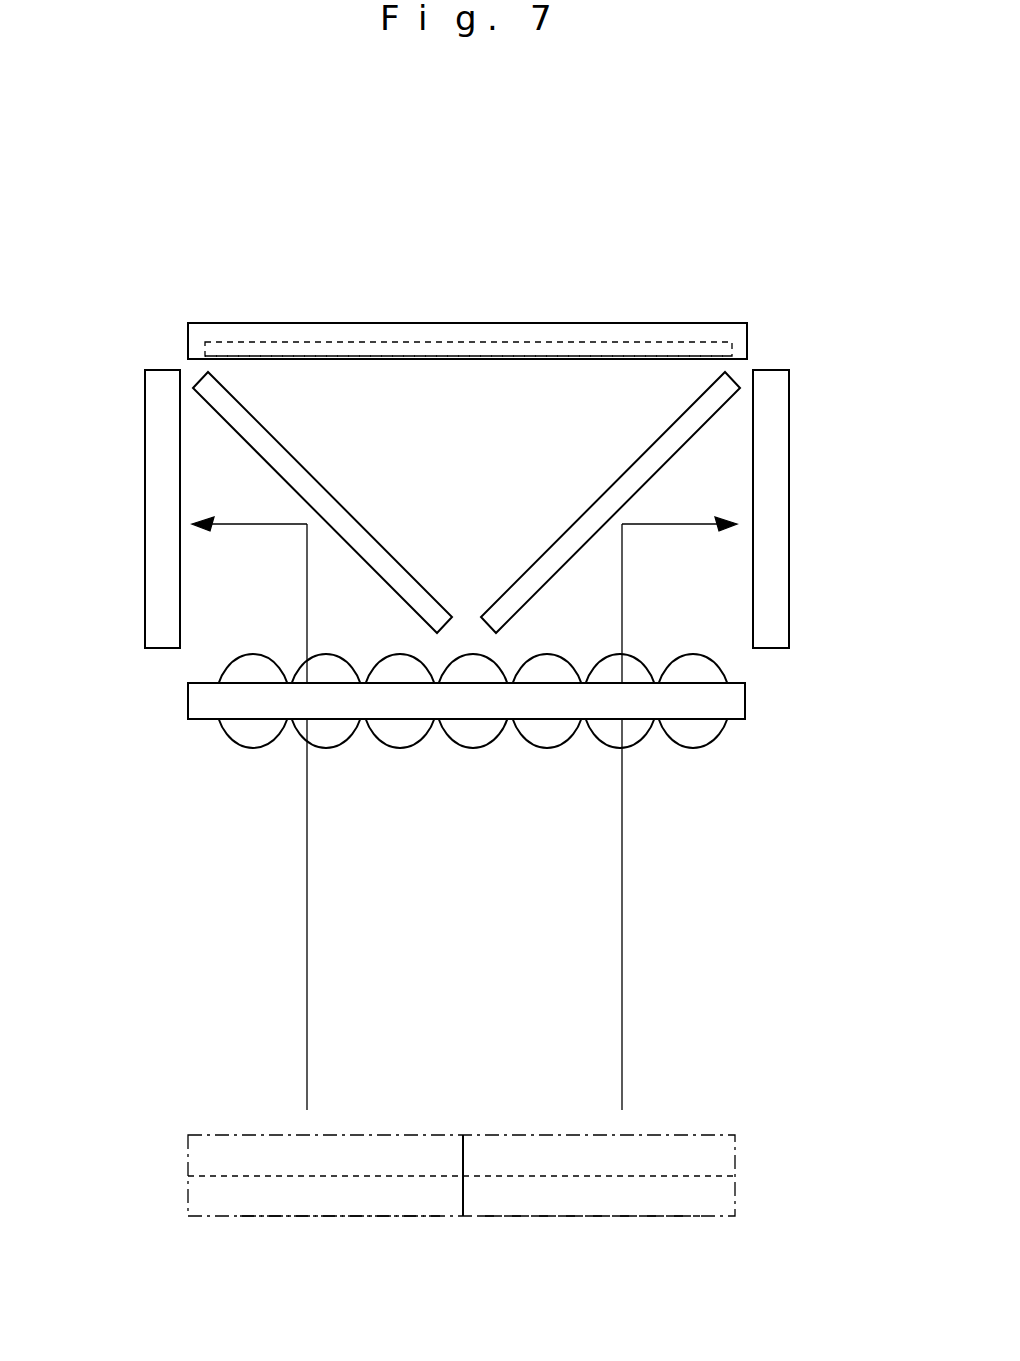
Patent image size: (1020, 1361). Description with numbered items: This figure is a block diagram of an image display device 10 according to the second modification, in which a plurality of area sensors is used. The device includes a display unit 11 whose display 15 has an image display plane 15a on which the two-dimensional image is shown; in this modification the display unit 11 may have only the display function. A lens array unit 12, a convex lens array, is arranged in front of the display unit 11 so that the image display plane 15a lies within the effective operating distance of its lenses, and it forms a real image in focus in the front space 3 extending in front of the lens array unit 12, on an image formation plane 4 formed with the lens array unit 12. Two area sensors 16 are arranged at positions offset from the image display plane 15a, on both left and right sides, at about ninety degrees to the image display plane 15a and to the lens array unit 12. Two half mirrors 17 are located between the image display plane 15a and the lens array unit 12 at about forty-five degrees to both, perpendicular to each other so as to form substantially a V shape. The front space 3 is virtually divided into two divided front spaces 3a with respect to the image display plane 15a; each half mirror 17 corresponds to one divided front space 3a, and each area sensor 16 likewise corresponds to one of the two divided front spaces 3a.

The front space 3 is at (738, 1147).
The virtually divided front space 3a is at (312, 1216).
The image formation plane 4 is at (230, 1175).
The image display device 10 is at (442, 266).
The display unit 11 is at (755, 332).
The lens array unit 12 is at (747, 697).
The display 15 is at (560, 340).
The image display plane 15a is at (622, 374).
The area sensor 16 is at (155, 603).
The half mirror 17 is at (240, 413).